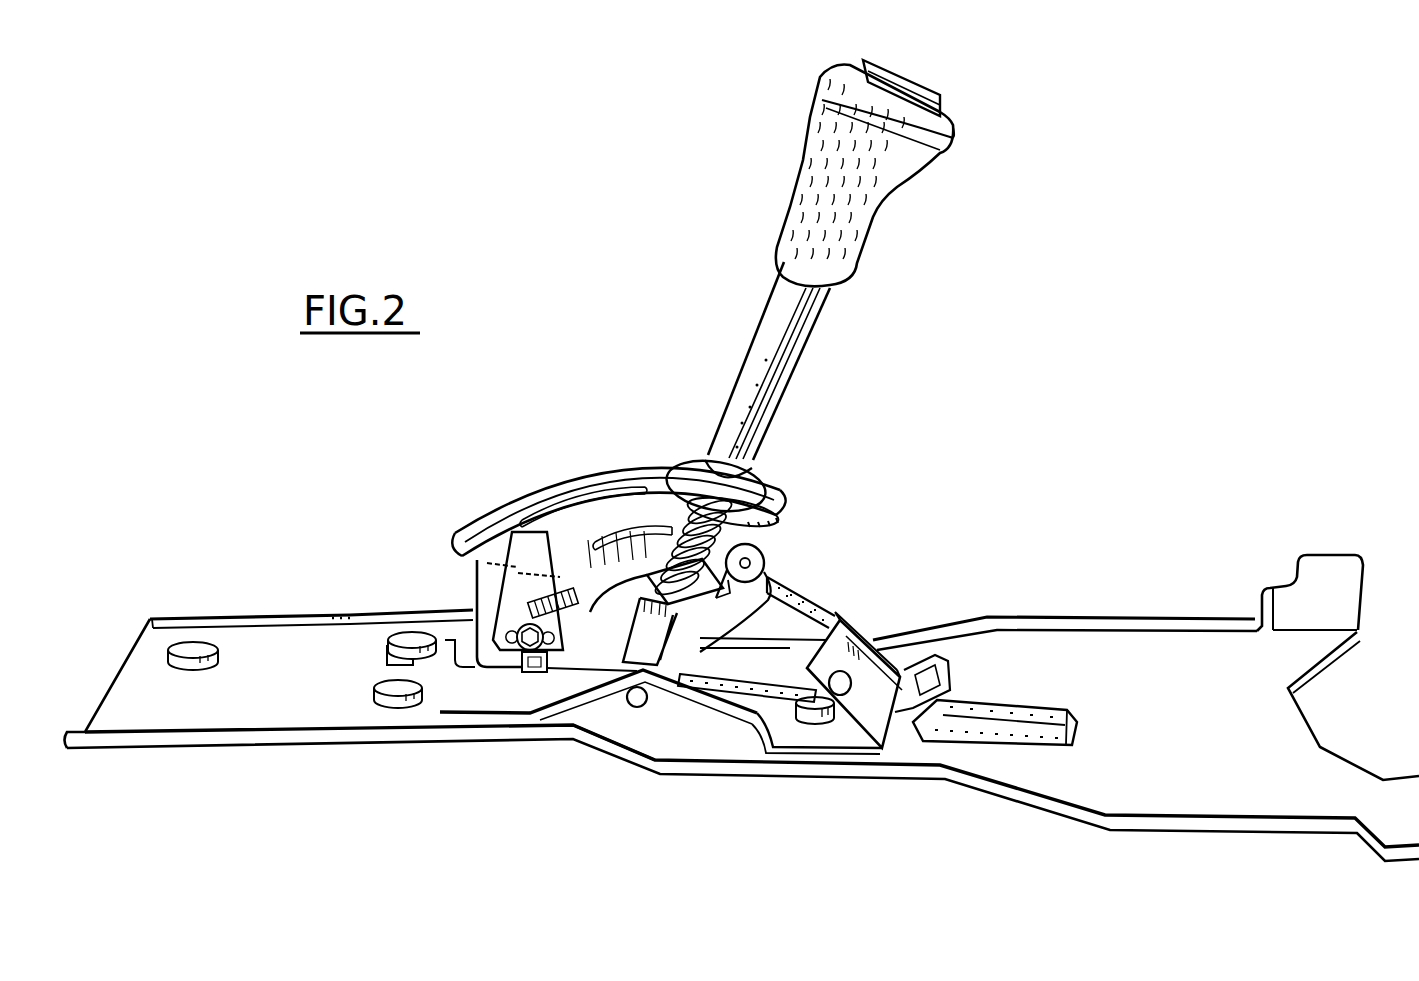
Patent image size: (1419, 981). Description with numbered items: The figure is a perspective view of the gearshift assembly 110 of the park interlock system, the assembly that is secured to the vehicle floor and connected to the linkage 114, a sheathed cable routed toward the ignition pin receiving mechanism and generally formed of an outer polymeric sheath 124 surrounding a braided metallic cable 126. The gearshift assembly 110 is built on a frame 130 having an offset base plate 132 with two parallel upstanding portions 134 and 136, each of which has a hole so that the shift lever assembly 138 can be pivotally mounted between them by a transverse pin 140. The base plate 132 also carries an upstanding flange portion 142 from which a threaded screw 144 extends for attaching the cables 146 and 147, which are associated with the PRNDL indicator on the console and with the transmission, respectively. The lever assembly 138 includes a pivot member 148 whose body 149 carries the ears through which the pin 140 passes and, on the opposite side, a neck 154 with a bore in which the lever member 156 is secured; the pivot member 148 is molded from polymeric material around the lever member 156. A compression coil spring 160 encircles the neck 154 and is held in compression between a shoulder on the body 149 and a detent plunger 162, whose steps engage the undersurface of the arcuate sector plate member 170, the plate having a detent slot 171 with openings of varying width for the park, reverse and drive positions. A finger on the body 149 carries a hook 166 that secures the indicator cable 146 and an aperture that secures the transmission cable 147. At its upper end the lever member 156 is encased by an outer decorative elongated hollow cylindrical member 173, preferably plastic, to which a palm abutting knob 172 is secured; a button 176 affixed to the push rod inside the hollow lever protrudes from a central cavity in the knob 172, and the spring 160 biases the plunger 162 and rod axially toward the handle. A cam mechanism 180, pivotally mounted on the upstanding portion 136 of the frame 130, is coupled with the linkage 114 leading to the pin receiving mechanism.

The gearshift assembly 110 is at (625, 200).
The linkage 114 is at (960, 735).
The outer polymeric sheath 124 is at (767, 727).
The braided metallic cable 126 is at (550, 680).
The frame 130 is at (393, 653).
The offset base plate 132 is at (443, 703).
The upstanding portion 134 is at (587, 710).
The upstanding portion 136 is at (480, 592).
The shift lever assembly 138 is at (738, 380).
The transverse pin 140 is at (636, 706).
The upstanding flange portion 142 is at (903, 637).
The threaded screw 144 is at (840, 690).
The cable 146 is at (845, 610).
The cable 147 is at (840, 610).
The pivot member 148 is at (790, 585).
The pivot member body 149 is at (730, 663).
The neck 154 is at (650, 540).
The lever member 156 is at (736, 528).
The compression coil spring 160 is at (668, 466).
The detent plunger 162 is at (760, 488).
The hook 166 is at (753, 617).
The arcuate sector plate member 170 is at (490, 522).
The detent slot 171 is at (577, 475).
The palm abutting knob 172 is at (887, 188).
The outer decorative elongated hollow cylindrical member 173 is at (803, 340).
The button 176 is at (912, 85).
The cam mechanism 180 is at (503, 563).